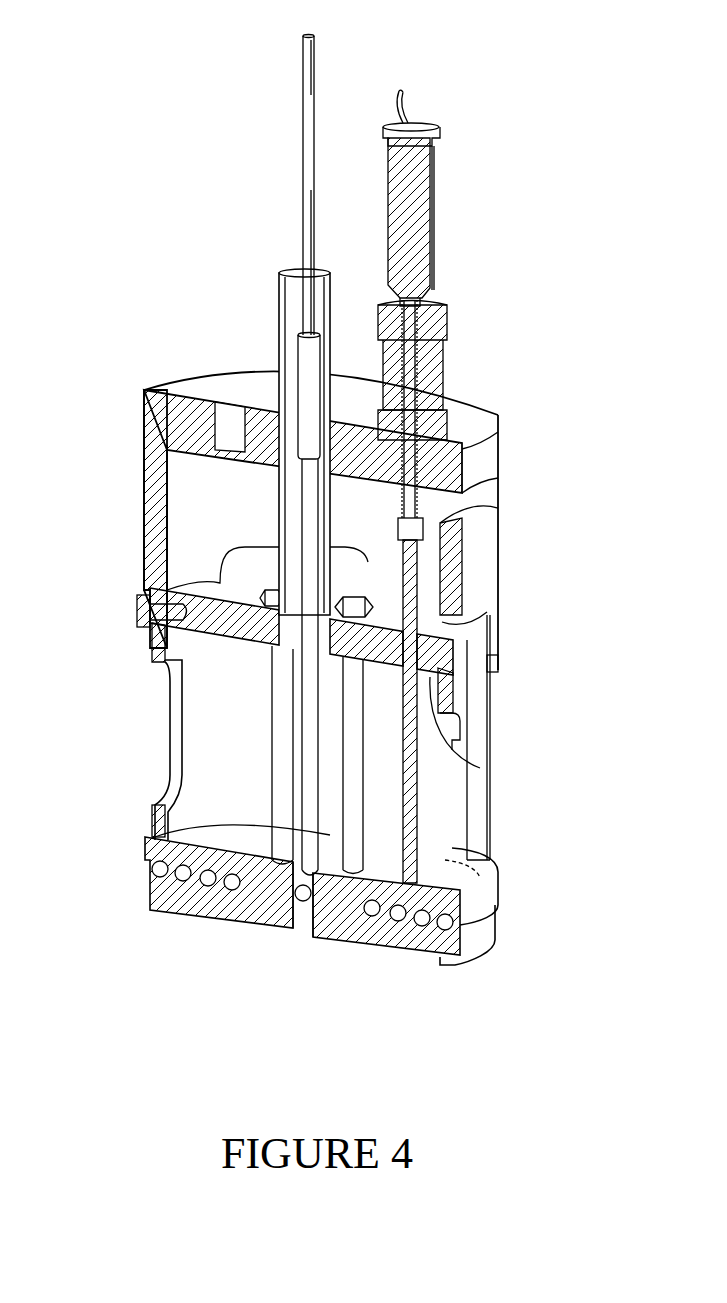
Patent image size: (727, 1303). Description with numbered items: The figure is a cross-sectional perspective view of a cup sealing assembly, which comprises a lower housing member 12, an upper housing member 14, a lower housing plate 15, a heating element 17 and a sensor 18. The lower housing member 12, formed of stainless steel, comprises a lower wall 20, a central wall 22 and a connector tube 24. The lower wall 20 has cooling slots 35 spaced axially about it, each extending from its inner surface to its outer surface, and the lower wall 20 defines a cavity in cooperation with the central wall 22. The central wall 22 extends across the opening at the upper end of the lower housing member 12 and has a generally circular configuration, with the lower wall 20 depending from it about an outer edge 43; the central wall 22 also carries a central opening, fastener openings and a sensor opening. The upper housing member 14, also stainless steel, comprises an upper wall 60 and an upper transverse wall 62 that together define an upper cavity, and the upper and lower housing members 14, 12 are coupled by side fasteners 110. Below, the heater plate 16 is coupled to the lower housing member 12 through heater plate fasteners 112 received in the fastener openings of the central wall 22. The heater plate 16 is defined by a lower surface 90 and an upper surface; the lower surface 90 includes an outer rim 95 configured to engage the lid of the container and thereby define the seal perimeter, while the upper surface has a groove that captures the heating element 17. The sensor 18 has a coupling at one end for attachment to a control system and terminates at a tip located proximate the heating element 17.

The lower housing member 12 is at (497, 728).
The upper housing member 14 is at (505, 518).
The lower housing plate 15 is at (502, 878).
The heater plate 16 is at (499, 930).
The heating element 17 is at (300, 143).
The sensor 18 is at (455, 312).
The lower wall 20 is at (478, 680).
The central wall 22 is at (485, 612).
The connector tube 24 is at (278, 312).
The cooling slots 35 is at (168, 697).
The outer edge 43 is at (480, 768).
The upper wall 60 is at (495, 453).
The upper transverse wall 62 is at (480, 413).
The lower surface 90 is at (336, 942).
The outer rim 95 is at (153, 915).
The side fasteners 110 is at (133, 610).
The heater plate fasteners 112 is at (270, 713).